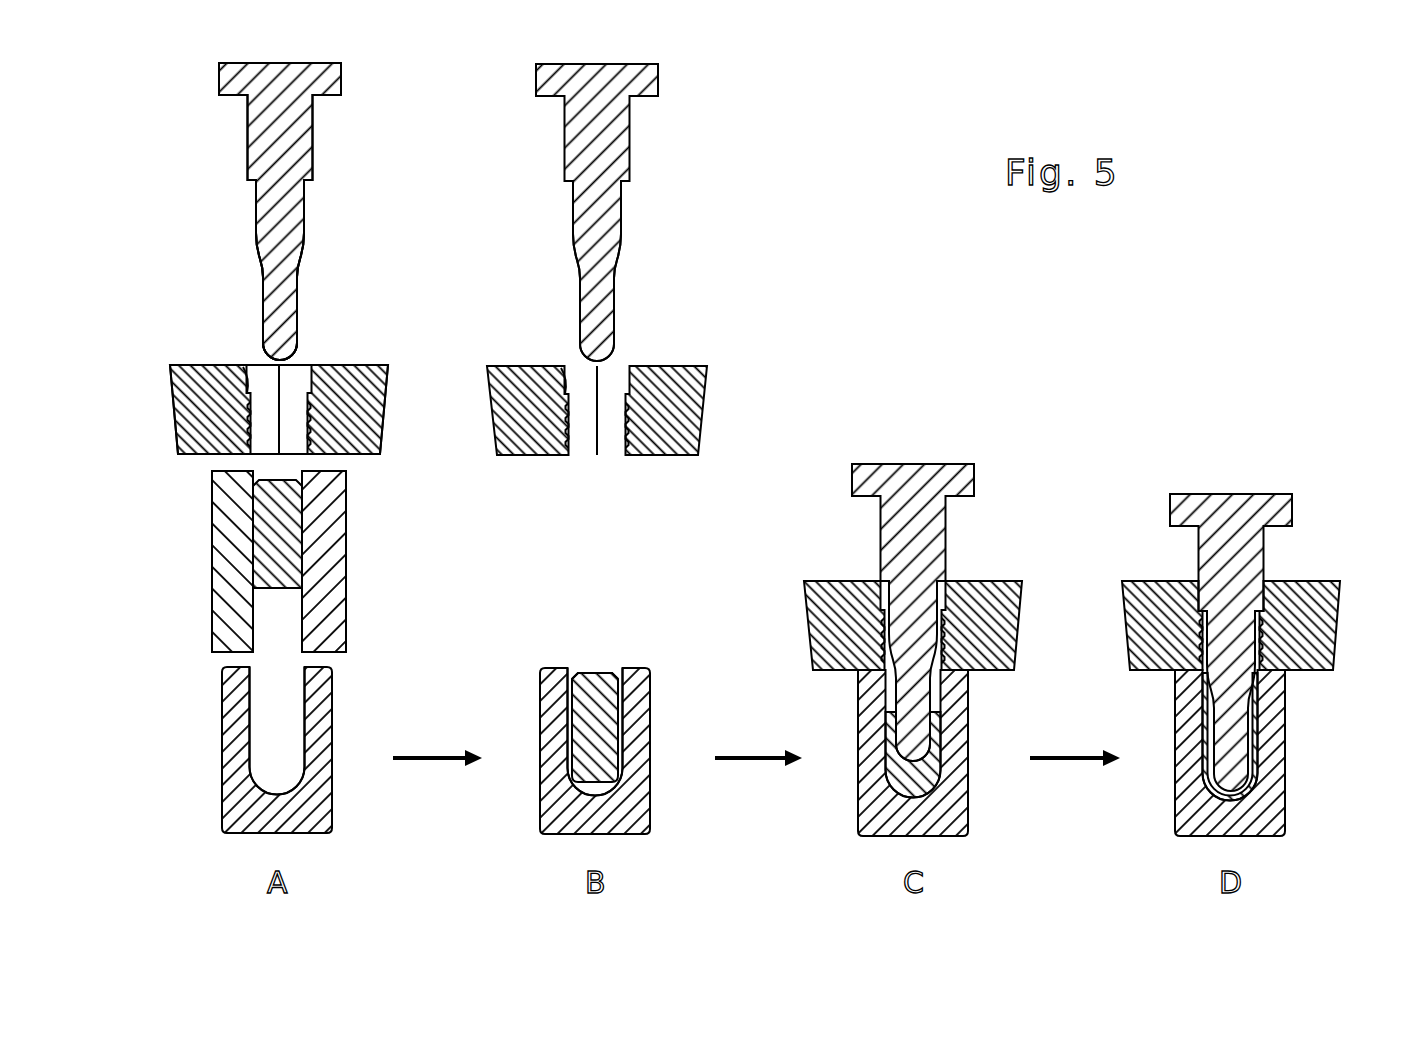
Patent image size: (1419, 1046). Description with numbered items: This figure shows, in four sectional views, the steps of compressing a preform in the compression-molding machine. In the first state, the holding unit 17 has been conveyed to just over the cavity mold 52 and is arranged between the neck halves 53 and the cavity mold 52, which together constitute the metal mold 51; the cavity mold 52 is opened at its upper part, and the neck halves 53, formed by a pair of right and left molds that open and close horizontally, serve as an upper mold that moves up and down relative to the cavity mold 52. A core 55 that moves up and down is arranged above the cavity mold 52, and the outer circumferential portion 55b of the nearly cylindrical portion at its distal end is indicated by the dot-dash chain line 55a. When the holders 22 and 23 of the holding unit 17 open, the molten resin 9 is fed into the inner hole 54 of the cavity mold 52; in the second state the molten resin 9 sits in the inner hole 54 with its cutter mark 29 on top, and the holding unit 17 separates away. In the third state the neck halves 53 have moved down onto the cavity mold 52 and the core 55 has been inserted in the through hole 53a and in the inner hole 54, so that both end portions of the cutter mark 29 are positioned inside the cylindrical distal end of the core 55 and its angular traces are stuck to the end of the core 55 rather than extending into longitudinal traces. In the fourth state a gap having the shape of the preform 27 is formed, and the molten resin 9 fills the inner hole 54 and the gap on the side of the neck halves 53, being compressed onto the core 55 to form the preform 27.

The metal mold 51 is at (214, 214).
The core 55 is at (305, 130).
The dot-dash chain line 55a is at (228, 316).
The outer circumferential portion 55b is at (297, 303).
The neck halves 53 is at (380, 405).
The through hole 53a is at (248, 386).
The cavity mold 52 is at (320, 800).
The inner hole 54 is at (290, 718).
The holding unit 17 is at (189, 547).
The holder 22 is at (220, 598).
The holder 23 is at (335, 592).
The molten resin 9 is at (295, 512).
The cutter mark 29 is at (595, 672).
The preform 27 is at (1252, 735).